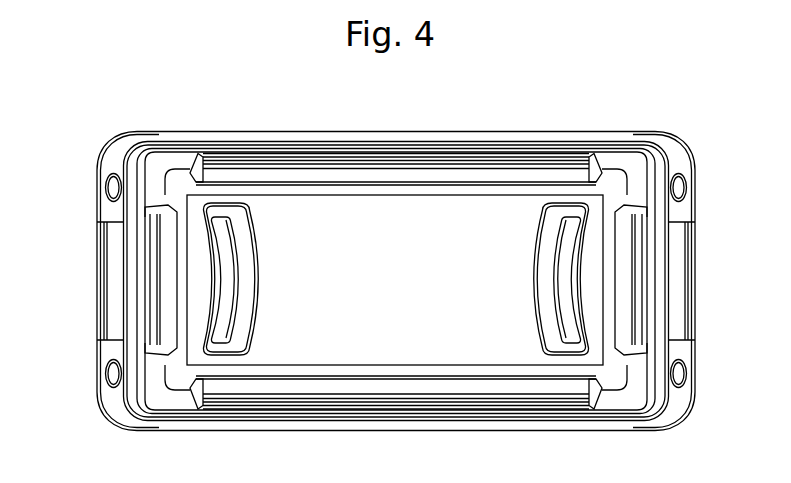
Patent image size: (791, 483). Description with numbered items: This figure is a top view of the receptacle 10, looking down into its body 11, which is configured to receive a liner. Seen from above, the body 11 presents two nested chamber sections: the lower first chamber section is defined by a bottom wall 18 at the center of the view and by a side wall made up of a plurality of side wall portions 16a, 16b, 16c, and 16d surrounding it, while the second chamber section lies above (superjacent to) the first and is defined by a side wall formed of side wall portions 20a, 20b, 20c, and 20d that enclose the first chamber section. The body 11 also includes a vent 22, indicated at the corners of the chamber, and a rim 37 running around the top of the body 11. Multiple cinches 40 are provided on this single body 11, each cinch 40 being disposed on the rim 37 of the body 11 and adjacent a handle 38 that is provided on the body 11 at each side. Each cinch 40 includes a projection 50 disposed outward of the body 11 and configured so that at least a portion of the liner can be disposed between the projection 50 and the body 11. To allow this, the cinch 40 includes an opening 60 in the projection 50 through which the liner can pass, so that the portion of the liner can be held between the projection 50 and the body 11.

The receptacle 10 is at (686, 117).
The body 11 is at (578, 132).
The side wall portion 16a is at (624, 300).
The side wall portion 16b is at (453, 386).
The side wall portion 16c is at (168, 300).
The side wall portion 16d is at (453, 173).
The bottom wall 18 is at (409, 292).
The side wall portion 20a is at (650, 260).
The side wall portion 20b is at (375, 412).
The side wall portion 20c is at (142, 260).
The side wall portion 20d is at (375, 148).
The vent 22 is at (165, 162).
The rim 37 is at (515, 140).
The handle 38 is at (100, 288).
The cinch 40 is at (77, 193).
The projection 50 is at (103, 186).
The opening 60 is at (111, 146).